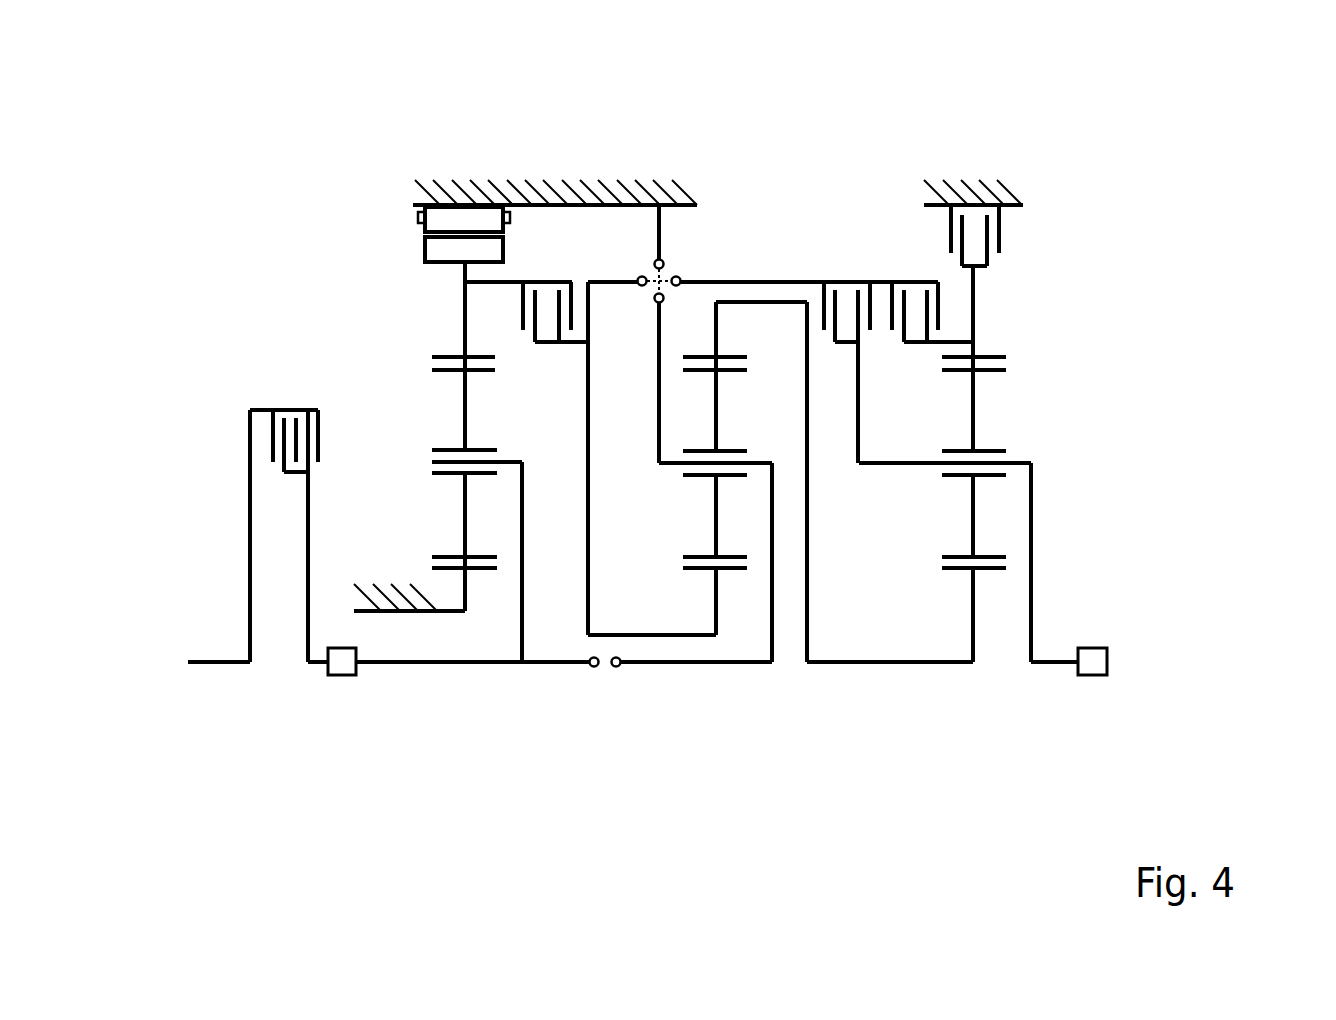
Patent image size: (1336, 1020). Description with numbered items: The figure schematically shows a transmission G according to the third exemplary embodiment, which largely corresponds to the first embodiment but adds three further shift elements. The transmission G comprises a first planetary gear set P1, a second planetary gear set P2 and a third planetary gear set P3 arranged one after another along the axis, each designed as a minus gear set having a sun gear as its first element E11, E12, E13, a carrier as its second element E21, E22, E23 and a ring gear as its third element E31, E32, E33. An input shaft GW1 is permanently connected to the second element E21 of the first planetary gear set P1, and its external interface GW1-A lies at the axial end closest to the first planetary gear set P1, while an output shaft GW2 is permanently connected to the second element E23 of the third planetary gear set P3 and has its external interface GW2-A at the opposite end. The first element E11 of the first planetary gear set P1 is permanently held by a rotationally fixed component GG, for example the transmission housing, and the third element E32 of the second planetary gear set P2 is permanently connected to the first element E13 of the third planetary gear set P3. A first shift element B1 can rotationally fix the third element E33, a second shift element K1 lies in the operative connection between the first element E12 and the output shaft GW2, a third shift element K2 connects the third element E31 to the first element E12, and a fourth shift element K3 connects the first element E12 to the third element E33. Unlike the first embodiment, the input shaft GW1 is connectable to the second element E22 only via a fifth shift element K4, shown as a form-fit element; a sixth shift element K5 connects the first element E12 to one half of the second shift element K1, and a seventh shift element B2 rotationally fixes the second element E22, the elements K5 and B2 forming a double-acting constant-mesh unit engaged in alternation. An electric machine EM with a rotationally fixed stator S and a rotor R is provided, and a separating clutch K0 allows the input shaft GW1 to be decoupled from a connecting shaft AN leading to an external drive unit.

The transmission G is at (1087, 425).
The rotationally fixed component GG is at (382, 604).
The connecting shaft AN is at (222, 664).
The separating clutch K0 is at (287, 401).
The external interface of the input shaft GW1-A is at (342, 676).
The input shaft GW1 is at (395, 664).
The electric machine EM is at (460, 327).
The stator S is at (447, 218).
The rotor R is at (479, 248).
The third element of the first planetary gear set E31 is at (447, 355).
The second element of the first planetary gear set E21 is at (505, 464).
The first element of the first planetary gear set E11 is at (480, 570).
The first planetary gear set P1 is at (465, 666).
The third shift element K2 is at (557, 274).
The sixth shift element K5 is at (673, 265).
The seventh shift element B2 is at (659, 281).
The third element of the second planetary gear set E32 is at (730, 355).
The second element of the second planetary gear set E22 is at (763, 465).
The first element of the second planetary gear set E12 is at (693, 570).
The second planetary gear set P2 is at (716, 666).
The fifth shift element K4 is at (607, 668).
The second shift element K1 is at (851, 274).
The fourth shift element K3 is at (919, 274).
The first shift element B1 is at (1010, 233).
The third element of the third planetary gear set E33 is at (1000, 355).
The second element of the third planetary gear set E23 is at (1020, 463).
The first element of the third planetary gear set E13 is at (955, 570).
The third planetary gear set P3 is at (972, 666).
The output shaft GW2 is at (1060, 664).
The external interface of the output shaft GW2-A is at (1093, 648).